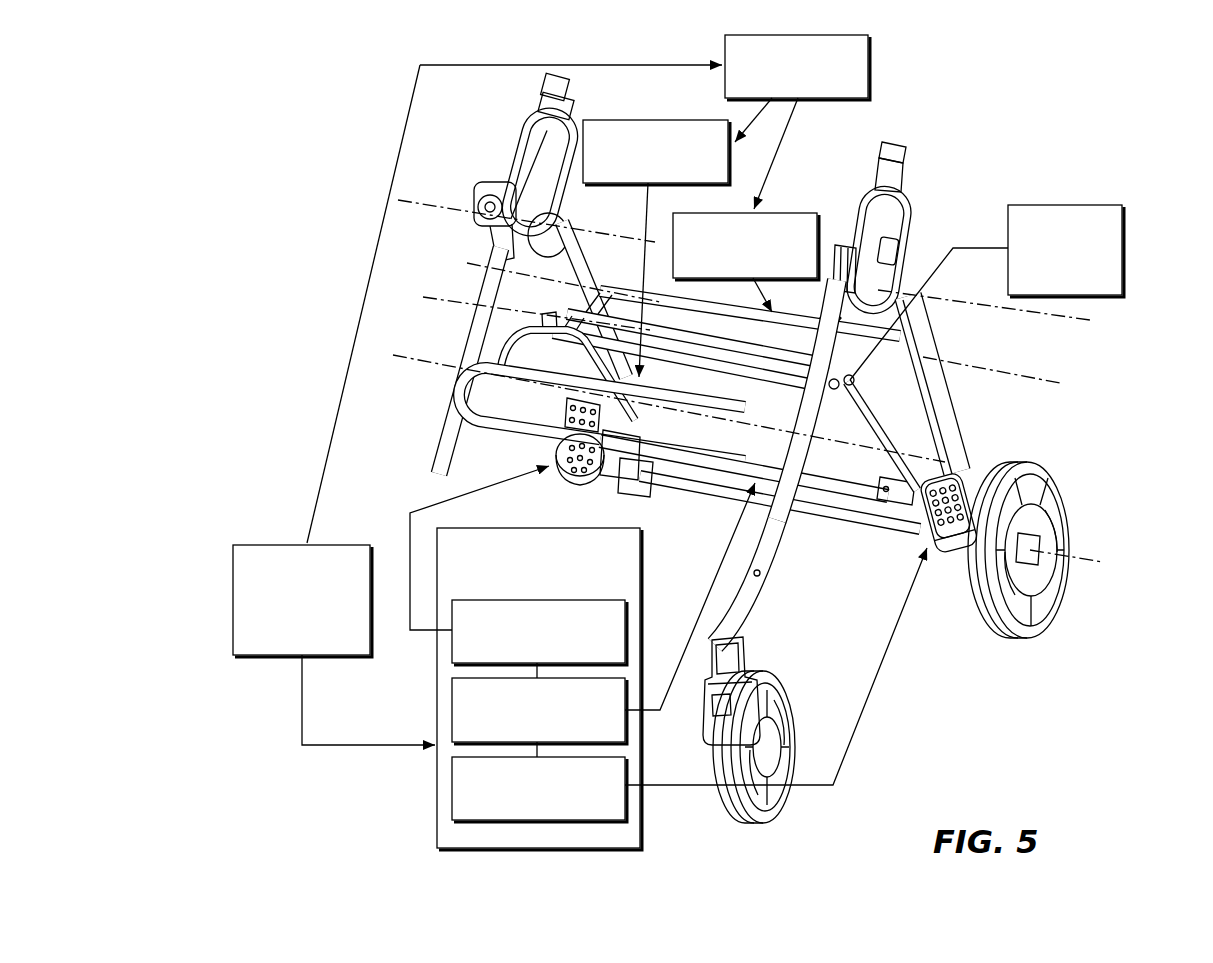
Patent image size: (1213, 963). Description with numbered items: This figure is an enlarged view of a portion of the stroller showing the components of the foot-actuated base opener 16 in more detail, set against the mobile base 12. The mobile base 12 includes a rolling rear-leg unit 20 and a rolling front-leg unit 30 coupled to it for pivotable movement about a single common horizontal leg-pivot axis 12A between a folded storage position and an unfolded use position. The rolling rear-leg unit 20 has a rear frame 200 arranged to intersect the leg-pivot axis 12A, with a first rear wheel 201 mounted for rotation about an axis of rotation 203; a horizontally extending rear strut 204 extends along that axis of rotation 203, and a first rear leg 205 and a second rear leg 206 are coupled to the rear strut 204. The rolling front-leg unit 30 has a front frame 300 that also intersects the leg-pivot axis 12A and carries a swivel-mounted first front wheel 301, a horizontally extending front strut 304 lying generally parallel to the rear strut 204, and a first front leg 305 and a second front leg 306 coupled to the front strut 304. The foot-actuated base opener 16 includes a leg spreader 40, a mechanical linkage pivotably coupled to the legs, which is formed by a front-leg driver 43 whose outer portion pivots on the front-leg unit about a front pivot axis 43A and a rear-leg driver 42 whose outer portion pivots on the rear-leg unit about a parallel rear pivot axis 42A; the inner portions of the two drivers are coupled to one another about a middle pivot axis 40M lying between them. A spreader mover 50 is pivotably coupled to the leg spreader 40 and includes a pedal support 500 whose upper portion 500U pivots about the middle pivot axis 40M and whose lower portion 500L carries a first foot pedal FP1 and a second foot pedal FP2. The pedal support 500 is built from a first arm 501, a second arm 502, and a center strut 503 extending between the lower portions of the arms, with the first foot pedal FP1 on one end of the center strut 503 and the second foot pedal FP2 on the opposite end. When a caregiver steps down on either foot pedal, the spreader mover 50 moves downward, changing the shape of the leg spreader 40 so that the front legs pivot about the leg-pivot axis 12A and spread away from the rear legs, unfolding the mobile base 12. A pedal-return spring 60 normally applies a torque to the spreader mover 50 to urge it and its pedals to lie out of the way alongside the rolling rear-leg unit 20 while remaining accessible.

The mobile base 12 is at (460, 167).
The leg-pivot axis 12A is at (772, 269).
The rear pivot axis 42A is at (486, 278).
The middle pivot axis 40M is at (468, 314).
The front pivot axis 43A is at (614, 408).
The second front leg 306 is at (434, 361).
The second arm 502 is at (602, 414).
The second rear leg 206 is at (600, 292).
The front-leg driver 43 is at (656, 234).
The rear-leg driver 42 is at (752, 234).
The leg spreader 40 is at (626, 289).
The pedal-return spring 60 is at (1017, 292).
The rear frame 200 is at (751, 281).
The first rear leg 205 is at (989, 387).
The rolling rear-leg unit 20 is at (981, 384).
The upper portion 500U is at (802, 395).
The first arm 501 is at (890, 436).
The center strut 503 is at (744, 492).
The rear strut 204 is at (780, 520).
The first front leg 305 is at (818, 573).
The rolling front-leg unit 30 is at (807, 462).
The front frame 300 is at (783, 599).
The front strut 304 is at (711, 691).
The first front wheel 301 is at (761, 766).
The first rear wheel 201 is at (1038, 561).
The axis of rotation 203 is at (1091, 530).
The lower portion 500L is at (914, 550).
The spreader mover 50 is at (558, 658).
The foot-actuated base opener 16 is at (300, 645).
The pedal support 500 is at (648, 610).
The first foot pedal FP1 is at (651, 685).
The second foot pedal FP2 is at (552, 531).